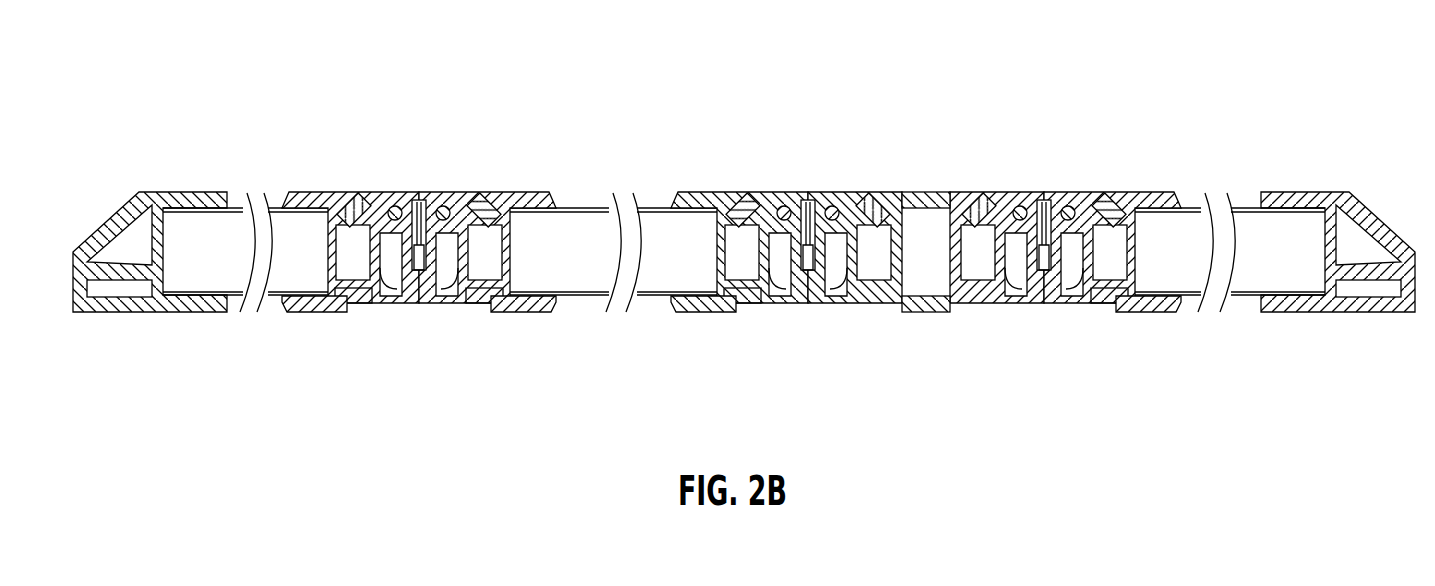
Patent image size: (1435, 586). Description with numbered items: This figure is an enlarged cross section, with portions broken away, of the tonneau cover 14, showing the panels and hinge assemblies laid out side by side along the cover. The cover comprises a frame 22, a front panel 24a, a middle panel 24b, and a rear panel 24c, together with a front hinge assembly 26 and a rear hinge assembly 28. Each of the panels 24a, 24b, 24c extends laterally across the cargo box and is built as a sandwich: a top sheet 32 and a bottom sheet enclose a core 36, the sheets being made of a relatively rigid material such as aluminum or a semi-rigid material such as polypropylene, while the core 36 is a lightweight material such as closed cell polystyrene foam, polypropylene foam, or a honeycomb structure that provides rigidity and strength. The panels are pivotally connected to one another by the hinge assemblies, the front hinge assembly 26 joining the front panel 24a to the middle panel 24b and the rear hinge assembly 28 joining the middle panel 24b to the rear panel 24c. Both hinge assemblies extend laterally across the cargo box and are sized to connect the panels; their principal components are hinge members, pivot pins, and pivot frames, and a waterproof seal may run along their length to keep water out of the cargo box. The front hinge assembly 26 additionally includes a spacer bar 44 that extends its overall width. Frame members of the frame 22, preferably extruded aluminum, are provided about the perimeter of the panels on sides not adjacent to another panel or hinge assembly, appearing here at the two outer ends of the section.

The tonneau cover 14 is at (303, 85).
The frame 22 is at (155, 192).
The front panel 24a is at (1250, 185).
The middle panel 24b is at (652, 185).
The rear panel 24c is at (239, 185).
The front hinge assembly 26 is at (934, 220).
The rear hinge assembly 28 is at (436, 220).
The top sheet 32 is at (205, 197).
The core 36 is at (584, 232).
The spacer bar 44 is at (928, 312).